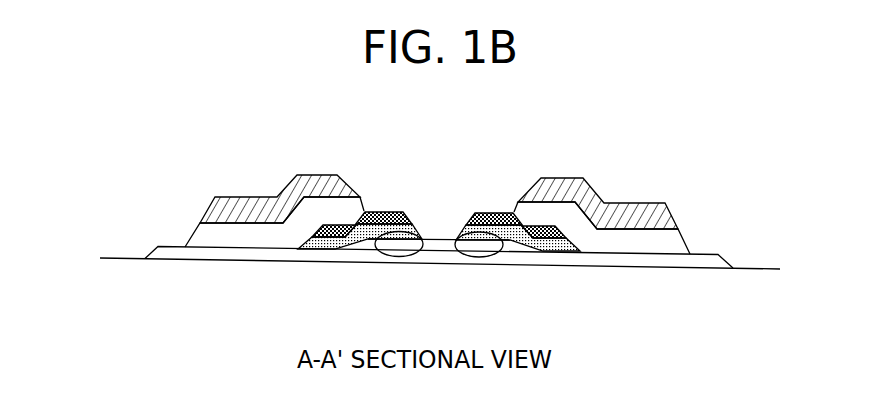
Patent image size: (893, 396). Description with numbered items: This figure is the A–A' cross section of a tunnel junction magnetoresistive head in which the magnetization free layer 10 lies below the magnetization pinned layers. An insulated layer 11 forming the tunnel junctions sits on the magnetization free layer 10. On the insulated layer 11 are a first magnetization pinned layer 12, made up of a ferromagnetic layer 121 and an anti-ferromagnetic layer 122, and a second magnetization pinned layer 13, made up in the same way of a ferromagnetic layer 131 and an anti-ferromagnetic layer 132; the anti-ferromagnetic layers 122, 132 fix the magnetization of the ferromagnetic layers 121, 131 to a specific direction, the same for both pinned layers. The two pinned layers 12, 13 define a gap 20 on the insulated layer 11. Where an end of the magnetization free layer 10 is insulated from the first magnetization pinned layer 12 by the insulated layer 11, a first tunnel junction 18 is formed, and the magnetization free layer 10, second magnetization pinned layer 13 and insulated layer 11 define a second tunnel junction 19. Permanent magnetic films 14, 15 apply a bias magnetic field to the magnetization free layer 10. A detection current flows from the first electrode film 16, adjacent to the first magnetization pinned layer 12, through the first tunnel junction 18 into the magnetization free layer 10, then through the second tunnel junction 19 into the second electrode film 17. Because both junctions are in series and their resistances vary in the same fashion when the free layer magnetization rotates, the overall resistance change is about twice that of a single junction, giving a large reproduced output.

The magnetization free layer 10 is at (442, 251).
The insulated layer 11 is at (622, 262).
The first magnetization pinned layer 12 is at (537, 214).
The ferromagnetic layer 121 is at (549, 249).
The anti-ferromagnetic layer 122 is at (512, 211).
The second magnetization pinned layer 13 is at (342, 211).
The ferromagnetic layer 131 is at (327, 244).
The anti-ferromagnetic layer 132 is at (378, 210).
The permanent magnetic film 14 is at (574, 220).
The permanent magnetic film 15 is at (305, 212).
The first electrode film 16 is at (667, 207).
The second electrode film 17 is at (214, 200).
The first tunnel junction 18 is at (488, 257).
The second tunnel junction 19 is at (389, 256).
The gap 20 is at (434, 238).